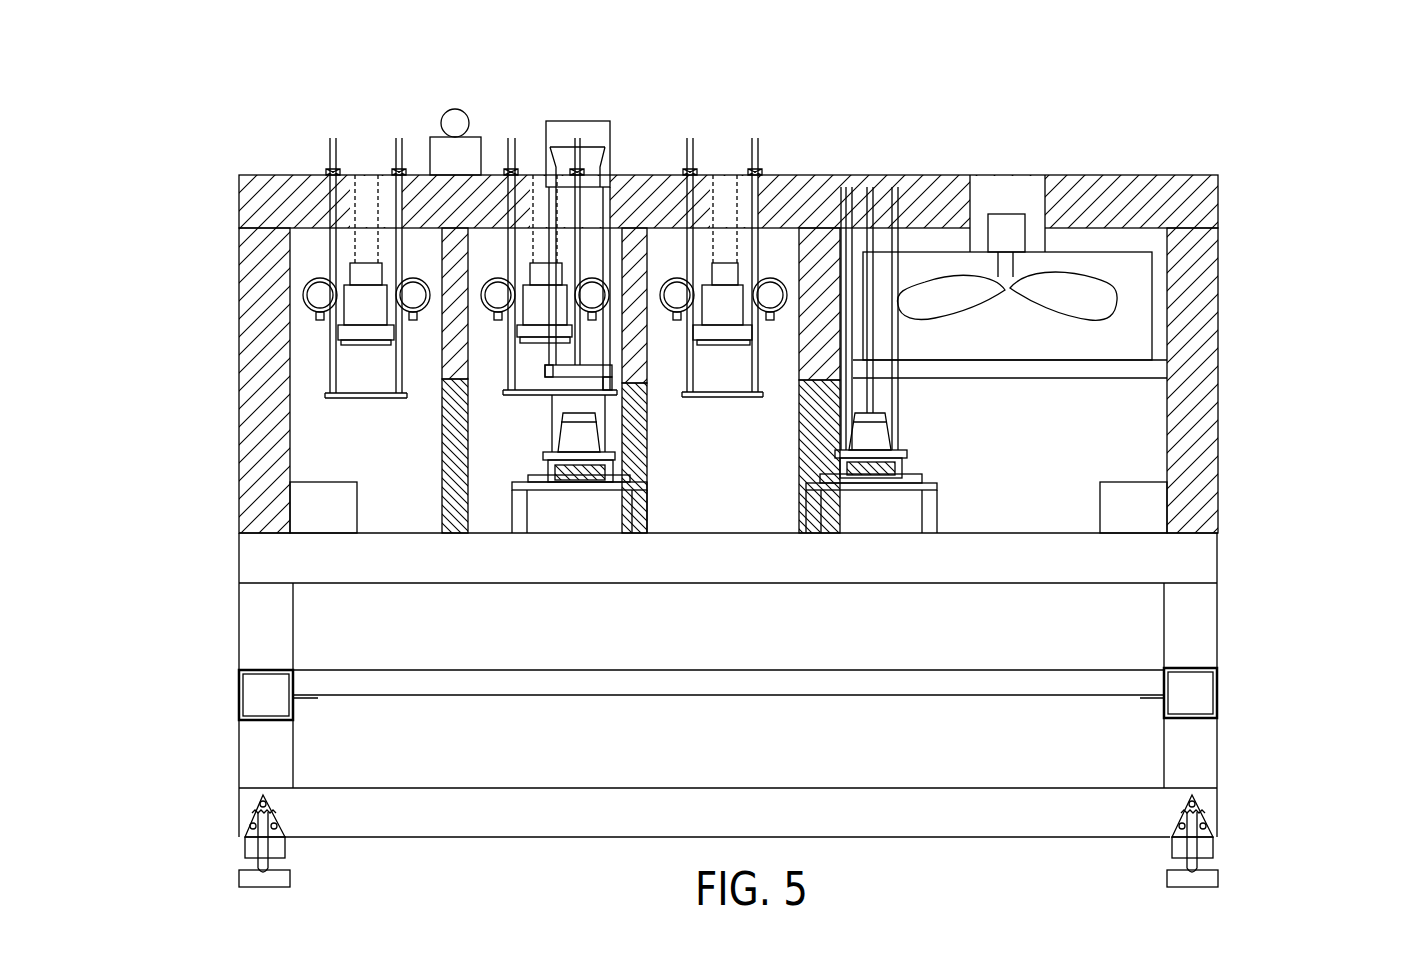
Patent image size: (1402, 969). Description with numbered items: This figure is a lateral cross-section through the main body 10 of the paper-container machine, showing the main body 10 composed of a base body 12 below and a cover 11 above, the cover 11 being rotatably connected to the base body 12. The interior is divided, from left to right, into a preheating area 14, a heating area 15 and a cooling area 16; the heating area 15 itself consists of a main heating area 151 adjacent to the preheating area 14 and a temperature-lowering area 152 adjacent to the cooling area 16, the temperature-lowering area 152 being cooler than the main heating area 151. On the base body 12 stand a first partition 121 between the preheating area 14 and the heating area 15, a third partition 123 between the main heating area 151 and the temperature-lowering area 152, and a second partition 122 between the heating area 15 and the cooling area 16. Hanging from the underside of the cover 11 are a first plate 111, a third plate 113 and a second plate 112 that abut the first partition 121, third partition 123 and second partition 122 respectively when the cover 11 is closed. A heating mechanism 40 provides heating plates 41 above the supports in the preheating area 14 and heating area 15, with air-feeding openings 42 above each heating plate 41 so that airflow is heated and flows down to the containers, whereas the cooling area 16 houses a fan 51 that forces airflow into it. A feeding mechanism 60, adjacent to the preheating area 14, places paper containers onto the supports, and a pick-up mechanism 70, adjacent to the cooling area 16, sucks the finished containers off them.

The main body 10 is at (774, 476).
The cover 11 is at (746, 340).
The base body 12 is at (785, 710).
The preheating area 14 is at (303, 360).
The heating area 15 is at (369, 464).
The main heating area 151 is at (480, 423).
The temperature-lowering area 152 is at (555, 455).
The cooling area 16 is at (1143, 428).
The first plate 111 is at (477, 227).
The second plate 112 is at (820, 262).
The third plate 113 is at (638, 255).
The first partition 121 is at (440, 507).
The second partition 122 is at (838, 385).
The third partition 123 is at (640, 408).
The heating mechanism 40 is at (369, 219).
The heating plate 41 is at (368, 335).
The air-feeding opening 42 is at (307, 312).
The fan 51 is at (1077, 300).
The feeding mechanism 60 is at (600, 135).
The pick-up mechanism 70 is at (823, 403).